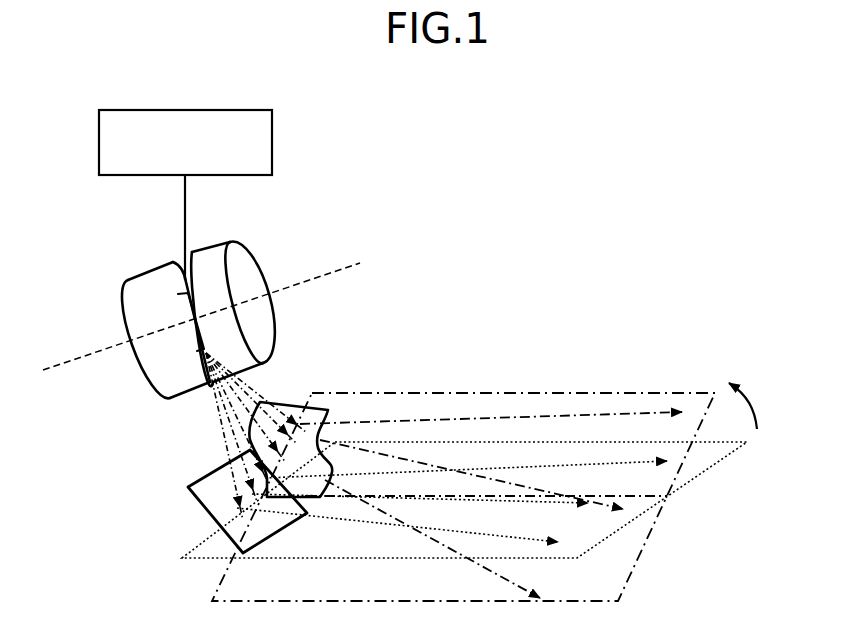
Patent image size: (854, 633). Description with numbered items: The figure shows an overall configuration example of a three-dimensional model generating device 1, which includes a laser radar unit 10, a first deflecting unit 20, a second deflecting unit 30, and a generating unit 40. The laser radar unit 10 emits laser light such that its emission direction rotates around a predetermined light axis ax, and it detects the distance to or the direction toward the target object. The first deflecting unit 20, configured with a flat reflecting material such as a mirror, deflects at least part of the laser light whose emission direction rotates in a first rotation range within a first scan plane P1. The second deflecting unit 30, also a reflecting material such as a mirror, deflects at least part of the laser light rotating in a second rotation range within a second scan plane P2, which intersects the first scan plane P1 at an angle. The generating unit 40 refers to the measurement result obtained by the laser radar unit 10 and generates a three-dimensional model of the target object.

The three-dimensional model generating device 1 is at (491, 159).
The laser radar unit 10 is at (233, 243).
The first deflecting unit 20 is at (190, 492).
The second deflecting unit 30 is at (272, 402).
The generating unit 40 is at (272, 142).
The light axis ax is at (322, 276).
The first scan plane P1 is at (730, 452).
The second scan plane P2 is at (625, 392).